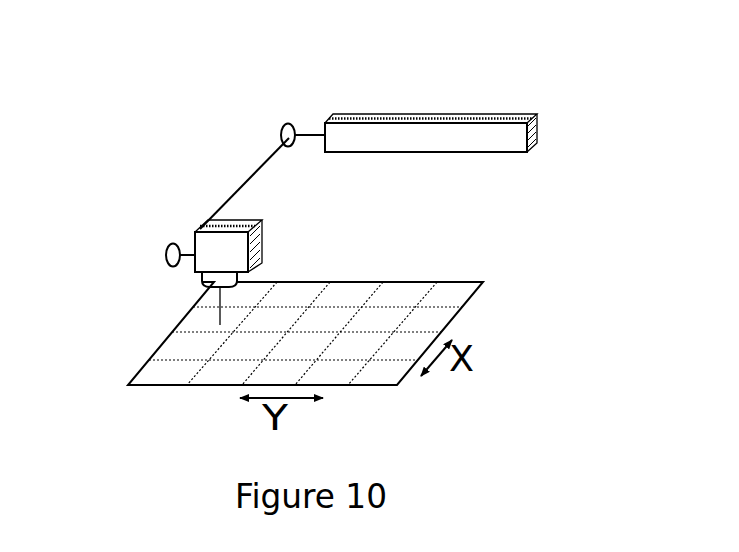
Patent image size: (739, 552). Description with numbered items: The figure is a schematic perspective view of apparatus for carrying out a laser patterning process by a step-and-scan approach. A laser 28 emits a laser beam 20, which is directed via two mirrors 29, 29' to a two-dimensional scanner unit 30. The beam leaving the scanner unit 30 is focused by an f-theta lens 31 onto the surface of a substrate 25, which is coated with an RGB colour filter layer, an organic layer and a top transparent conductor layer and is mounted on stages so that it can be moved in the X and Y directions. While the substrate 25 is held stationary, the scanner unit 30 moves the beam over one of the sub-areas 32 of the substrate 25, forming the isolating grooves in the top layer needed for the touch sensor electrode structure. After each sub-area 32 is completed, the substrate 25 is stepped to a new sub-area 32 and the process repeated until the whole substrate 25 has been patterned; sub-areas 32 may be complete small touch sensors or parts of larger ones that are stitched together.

The laser beam 20 is at (308, 126).
The substrate 25 is at (484, 293).
The laser 28 is at (428, 108).
The mirror 29 is at (233, 91).
The mirror 29' is at (149, 217).
The two-dimensional scanner unit 30 is at (270, 240).
The f-theta lens 31 is at (199, 277).
The sub-area 32 is at (409, 288).